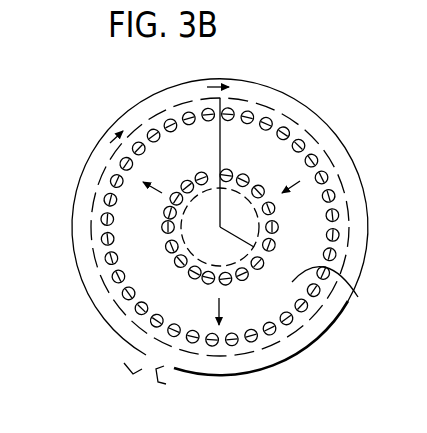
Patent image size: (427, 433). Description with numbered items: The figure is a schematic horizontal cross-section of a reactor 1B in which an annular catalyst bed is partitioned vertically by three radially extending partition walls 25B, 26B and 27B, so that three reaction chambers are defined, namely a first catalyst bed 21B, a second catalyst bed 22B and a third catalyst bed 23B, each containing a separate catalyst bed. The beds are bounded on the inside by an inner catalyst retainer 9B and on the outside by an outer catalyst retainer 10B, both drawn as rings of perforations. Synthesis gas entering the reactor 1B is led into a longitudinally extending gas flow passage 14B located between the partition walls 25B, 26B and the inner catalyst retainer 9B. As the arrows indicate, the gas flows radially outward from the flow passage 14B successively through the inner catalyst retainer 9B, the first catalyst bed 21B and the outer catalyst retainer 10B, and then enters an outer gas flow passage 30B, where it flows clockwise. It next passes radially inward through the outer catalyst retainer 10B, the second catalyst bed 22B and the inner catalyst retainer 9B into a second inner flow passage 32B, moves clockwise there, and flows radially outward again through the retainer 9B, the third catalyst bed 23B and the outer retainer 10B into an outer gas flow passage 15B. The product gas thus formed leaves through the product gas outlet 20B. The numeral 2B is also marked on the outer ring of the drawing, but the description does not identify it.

The reactor 1B is at (122, 343).
The outer passage hole 2B is at (104, 200).
The inner catalyst retainer 9B is at (256, 190).
The outer catalyst retainer 10B is at (109, 163).
The gas flow passage 14B is at (199, 191).
The outer gas flow passage 15B is at (192, 368).
The product gas outlet 20B is at (141, 377).
The first catalyst bed 21B is at (220, 227).
The second catalyst bed 22B is at (268, 207).
The third catalyst bed 23B is at (274, 298).
The partition wall 25B is at (176, 262).
The partition wall 26B is at (222, 140).
The partition wall 27B is at (250, 247).
The outer gas flow passage 30B is at (79, 256).
The second inner flow passage 32B is at (247, 220).